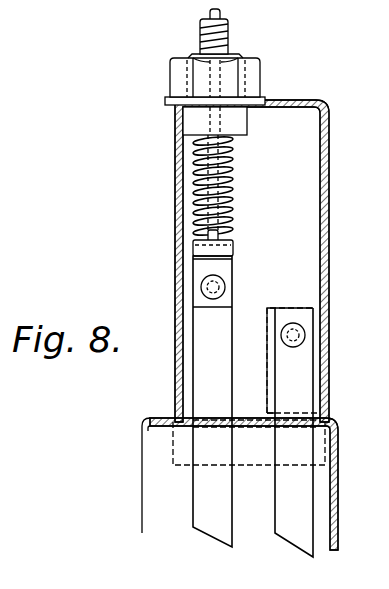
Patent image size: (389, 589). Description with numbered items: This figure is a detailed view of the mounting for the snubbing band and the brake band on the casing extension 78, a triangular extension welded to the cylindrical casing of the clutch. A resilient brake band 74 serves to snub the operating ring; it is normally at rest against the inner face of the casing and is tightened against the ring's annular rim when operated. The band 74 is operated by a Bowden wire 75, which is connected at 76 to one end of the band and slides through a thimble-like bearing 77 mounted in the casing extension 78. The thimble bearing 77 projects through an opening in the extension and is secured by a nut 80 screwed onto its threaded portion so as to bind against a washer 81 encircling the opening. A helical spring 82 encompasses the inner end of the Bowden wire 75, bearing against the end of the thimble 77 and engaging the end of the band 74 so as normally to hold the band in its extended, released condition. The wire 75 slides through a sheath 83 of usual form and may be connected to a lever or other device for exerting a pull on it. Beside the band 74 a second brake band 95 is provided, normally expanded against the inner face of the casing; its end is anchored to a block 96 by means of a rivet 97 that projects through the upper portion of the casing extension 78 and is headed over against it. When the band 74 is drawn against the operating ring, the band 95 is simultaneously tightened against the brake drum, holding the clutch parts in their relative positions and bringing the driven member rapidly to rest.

The brake band 74 is at (212, 401).
The Bowden wire 75 is at (209, 15).
The connection 76 is at (235, 252).
The thimble-like bearing 77 is at (215, 121).
The casing-extension 78 is at (330, 137).
The nut 80 is at (260, 70).
The washer 81 is at (265, 101).
The helical spring 82 is at (233, 181).
The sheath 83 is at (228, 44).
The brake band 95 is at (294, 432).
The block 96 is at (268, 313).
The rivet 97 is at (298, 335).